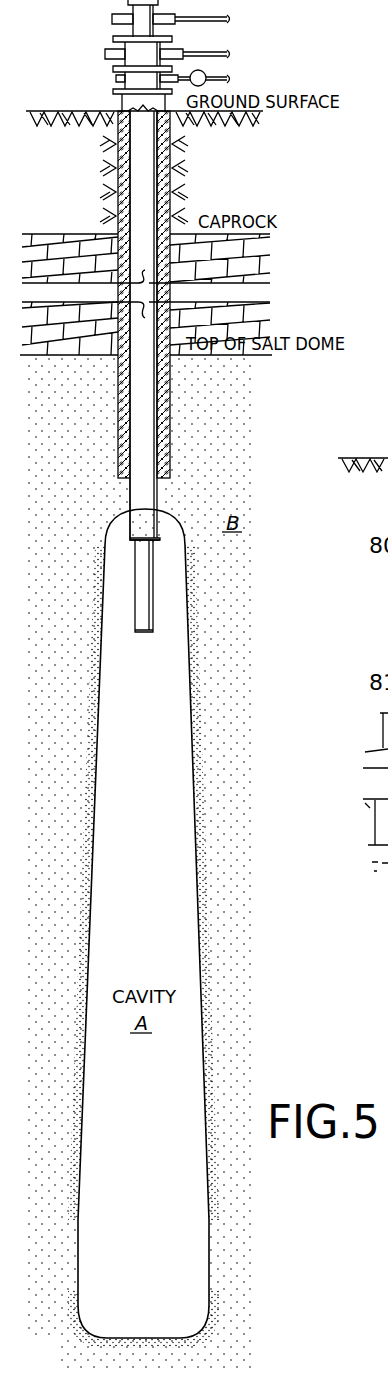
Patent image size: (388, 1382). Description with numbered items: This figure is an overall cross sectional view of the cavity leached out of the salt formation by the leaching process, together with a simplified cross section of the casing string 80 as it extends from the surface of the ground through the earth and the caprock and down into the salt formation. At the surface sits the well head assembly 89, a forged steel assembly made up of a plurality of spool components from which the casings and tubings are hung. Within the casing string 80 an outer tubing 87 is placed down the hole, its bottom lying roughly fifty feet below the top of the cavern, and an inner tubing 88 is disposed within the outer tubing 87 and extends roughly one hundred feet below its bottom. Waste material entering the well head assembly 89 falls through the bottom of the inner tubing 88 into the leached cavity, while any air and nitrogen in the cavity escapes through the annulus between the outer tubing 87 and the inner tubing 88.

The casing string 80 is at (119, 370).
The outer tubing 87 is at (140, 522).
The inner tubing 88 is at (145, 610).
The well head assembly 89 is at (109, 63).